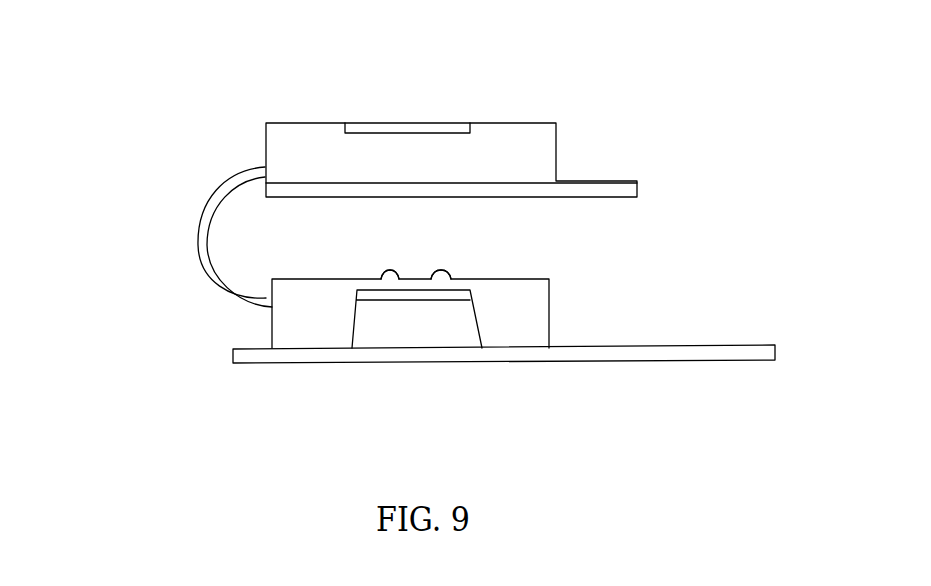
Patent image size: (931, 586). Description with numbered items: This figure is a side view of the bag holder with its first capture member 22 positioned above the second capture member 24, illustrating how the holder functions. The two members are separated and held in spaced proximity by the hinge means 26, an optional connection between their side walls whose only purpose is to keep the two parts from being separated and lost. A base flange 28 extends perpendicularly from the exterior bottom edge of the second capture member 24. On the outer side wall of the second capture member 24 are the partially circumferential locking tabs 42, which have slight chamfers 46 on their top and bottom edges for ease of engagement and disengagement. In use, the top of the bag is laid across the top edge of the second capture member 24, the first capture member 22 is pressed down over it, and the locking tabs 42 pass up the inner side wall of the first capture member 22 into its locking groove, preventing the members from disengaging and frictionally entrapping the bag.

The first capture member 22 is at (556, 123).
The second capture member 24 is at (527, 333).
The hinge means 26 is at (199, 262).
The base flange 28 is at (705, 355).
The locking tabs 42 is at (460, 297).
The chamfers 46 is at (389, 270).